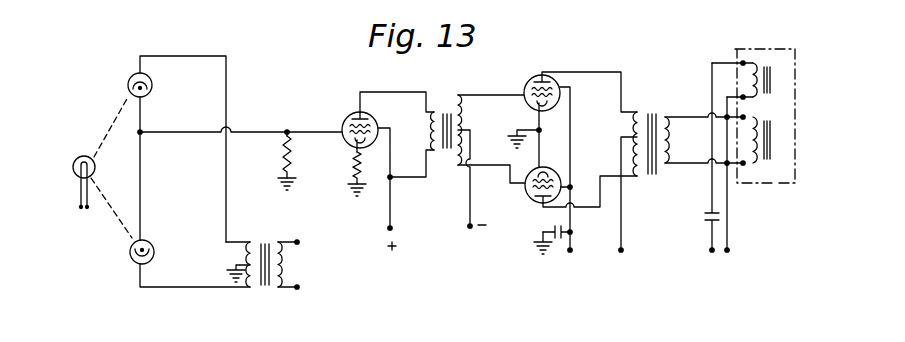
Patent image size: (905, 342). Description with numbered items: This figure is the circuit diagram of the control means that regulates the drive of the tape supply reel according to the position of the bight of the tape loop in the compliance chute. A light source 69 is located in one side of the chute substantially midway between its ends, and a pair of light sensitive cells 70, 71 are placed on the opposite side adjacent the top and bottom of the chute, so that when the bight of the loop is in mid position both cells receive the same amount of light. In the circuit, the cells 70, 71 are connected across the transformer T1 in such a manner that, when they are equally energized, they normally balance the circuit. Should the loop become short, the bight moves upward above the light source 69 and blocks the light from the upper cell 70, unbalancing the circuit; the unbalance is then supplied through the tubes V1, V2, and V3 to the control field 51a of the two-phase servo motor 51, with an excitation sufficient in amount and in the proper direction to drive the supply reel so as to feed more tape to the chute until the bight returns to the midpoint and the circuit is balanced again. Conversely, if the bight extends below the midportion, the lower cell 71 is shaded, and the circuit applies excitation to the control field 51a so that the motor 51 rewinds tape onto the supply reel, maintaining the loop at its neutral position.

The light source 69 is at (80, 156).
The light sensitive cell 70 is at (128, 80).
The light sensitive cell 71 is at (130, 259).
The two-phase servo motor 51 is at (737, 85).
The control field 51a is at (776, 168).
The transformer T1 is at (262, 249).
The tube V1 is at (343, 115).
The tube V2 is at (523, 75).
The tube V3 is at (538, 203).